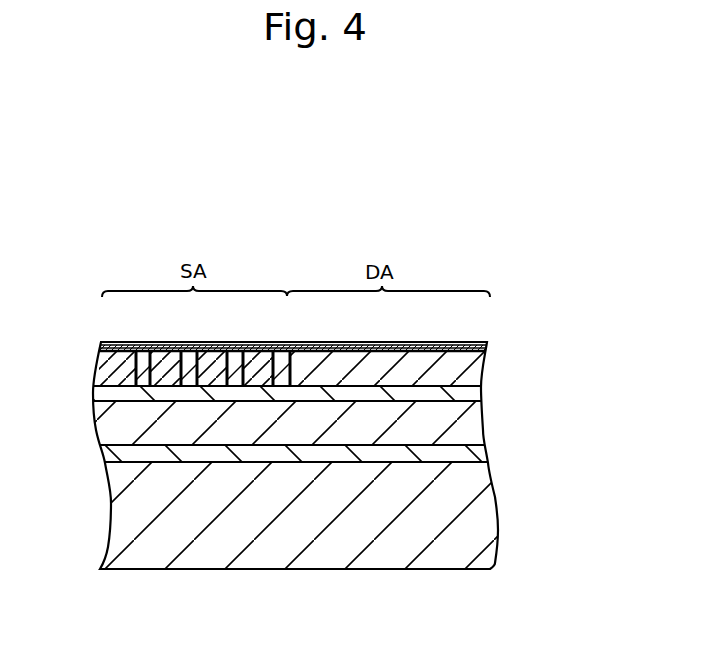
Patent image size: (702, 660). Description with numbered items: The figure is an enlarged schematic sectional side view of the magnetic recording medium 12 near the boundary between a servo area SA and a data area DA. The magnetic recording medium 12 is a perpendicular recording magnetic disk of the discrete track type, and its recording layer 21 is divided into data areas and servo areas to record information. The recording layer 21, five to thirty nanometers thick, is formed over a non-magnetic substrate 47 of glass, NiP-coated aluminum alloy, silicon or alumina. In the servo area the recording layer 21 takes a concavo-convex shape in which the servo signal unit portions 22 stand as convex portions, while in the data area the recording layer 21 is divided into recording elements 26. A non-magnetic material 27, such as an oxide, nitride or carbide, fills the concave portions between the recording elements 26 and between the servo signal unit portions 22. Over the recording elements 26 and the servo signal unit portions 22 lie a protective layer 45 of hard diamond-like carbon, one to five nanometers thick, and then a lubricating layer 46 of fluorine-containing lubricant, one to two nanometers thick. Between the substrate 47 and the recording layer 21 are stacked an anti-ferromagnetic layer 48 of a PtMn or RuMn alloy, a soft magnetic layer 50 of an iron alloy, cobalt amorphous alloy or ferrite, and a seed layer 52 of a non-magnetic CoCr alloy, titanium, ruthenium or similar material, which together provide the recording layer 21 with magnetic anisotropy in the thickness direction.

The magnetic recording medium 12 is at (306, 197).
The recording layer 21 is at (492, 372).
The servo signal unit portions 22 is at (214, 350).
The recording elements 26 is at (381, 368).
The non-magnetic material 27 is at (182, 349).
The protective layer 45 is at (488, 348).
The lubricating layer 46 is at (490, 341).
The substrate 47 is at (495, 503).
The anti-ferromagnetic layer 48 is at (490, 452).
The soft magnetic layer 50 is at (488, 428).
The seed layer 52 is at (488, 393).